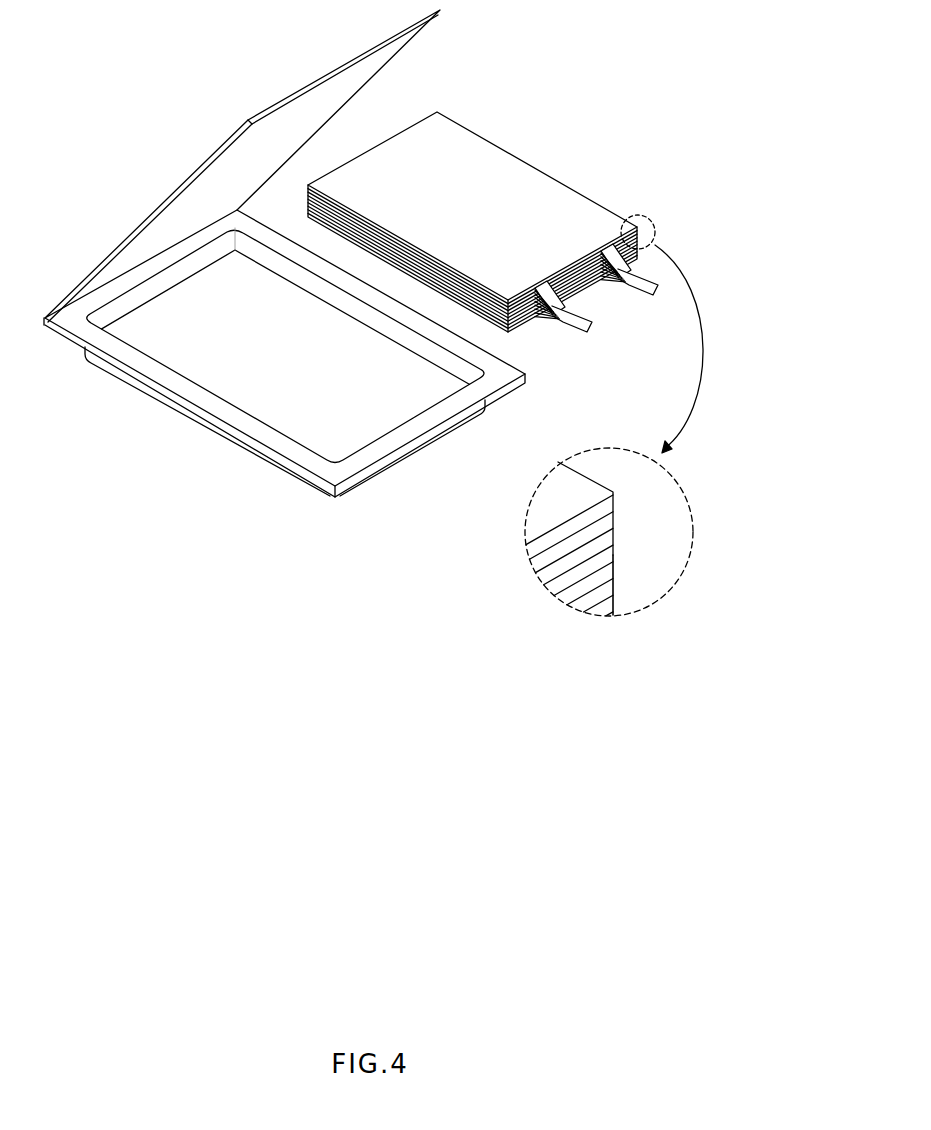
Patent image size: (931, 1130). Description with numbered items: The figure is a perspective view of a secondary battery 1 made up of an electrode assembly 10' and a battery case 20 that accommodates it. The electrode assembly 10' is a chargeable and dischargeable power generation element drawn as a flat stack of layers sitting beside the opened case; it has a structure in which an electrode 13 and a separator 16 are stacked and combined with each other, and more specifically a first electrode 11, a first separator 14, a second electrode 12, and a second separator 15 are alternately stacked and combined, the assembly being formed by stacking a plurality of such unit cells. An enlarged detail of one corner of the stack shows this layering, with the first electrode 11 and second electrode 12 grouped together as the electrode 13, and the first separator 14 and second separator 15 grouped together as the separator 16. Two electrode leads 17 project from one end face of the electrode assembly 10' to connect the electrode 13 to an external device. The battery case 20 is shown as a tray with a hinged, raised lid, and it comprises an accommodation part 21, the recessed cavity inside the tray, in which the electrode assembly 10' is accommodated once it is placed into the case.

The secondary battery 1 is at (626, 15).
The electrode assembly 10' is at (481, 193).
The first electrode 11 is at (535, 562).
The second electrode 12 is at (555, 585).
The electrode 13 is at (521, 558).
The first separator 14 is at (607, 500).
The second separator 15 is at (607, 538).
The separator 16 is at (669, 538).
The electrode lead 17 is at (592, 322).
The battery case 20 is at (240, 466).
The accommodation part 21 is at (234, 383).